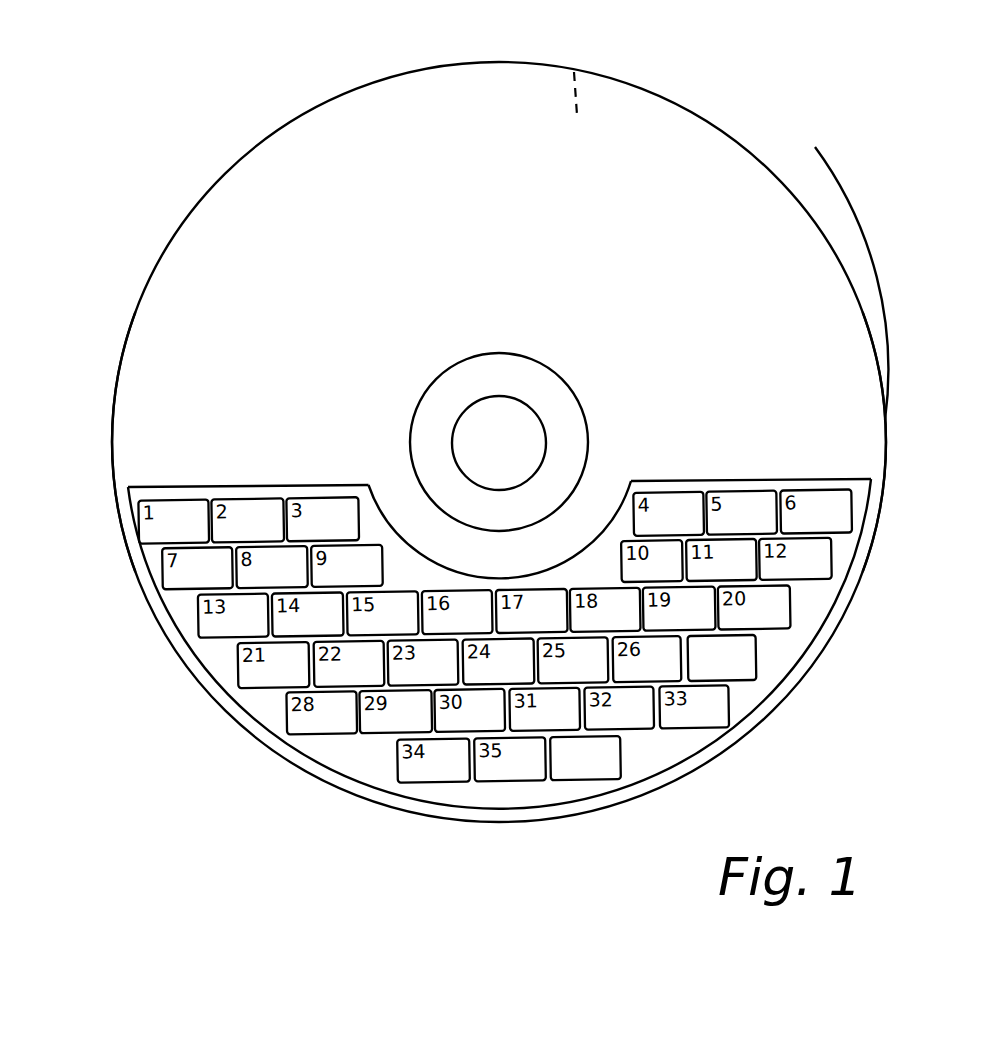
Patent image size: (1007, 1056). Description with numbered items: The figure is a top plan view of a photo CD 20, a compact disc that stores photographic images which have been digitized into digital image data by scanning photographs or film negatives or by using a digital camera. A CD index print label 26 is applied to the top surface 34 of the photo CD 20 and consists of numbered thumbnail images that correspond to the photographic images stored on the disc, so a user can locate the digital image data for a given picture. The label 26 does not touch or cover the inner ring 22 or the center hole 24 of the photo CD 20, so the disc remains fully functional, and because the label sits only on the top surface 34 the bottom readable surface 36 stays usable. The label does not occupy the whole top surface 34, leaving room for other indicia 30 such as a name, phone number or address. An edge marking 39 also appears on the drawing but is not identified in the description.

The disc-shaped electronic device 20 is at (874, 216).
The central hub 22 is at (422, 398).
The center hole 24 is at (503, 455).
The keypad area 26 is at (808, 613).
The indicia 30 is at (598, 192).
The peripheral edge 34 is at (140, 448).
The outer rim 36 is at (573, 68).
The edge surface 39 is at (848, 383).